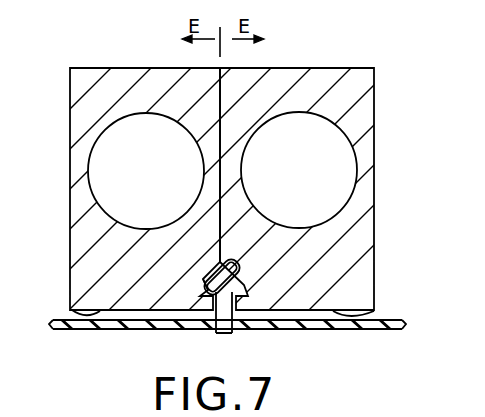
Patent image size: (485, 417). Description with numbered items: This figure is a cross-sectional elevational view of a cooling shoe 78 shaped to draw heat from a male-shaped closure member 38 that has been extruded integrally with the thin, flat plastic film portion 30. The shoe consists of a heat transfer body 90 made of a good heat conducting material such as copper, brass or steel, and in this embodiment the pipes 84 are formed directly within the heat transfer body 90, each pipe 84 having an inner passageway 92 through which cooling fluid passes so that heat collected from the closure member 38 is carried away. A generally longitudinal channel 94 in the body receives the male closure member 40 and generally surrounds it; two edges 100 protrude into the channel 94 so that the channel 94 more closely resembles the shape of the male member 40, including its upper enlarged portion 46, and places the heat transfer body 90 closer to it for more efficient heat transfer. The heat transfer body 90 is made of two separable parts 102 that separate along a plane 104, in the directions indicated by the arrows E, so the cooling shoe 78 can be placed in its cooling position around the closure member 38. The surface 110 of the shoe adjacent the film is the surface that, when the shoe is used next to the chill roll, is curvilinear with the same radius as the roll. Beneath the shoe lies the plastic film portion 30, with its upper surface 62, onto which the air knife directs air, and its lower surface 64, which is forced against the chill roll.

The cooling shoe 78 is at (396, 74).
The heat transfer body 90 is at (112, 78).
The separable parts 102 is at (187, 102).
The pipe 84 is at (98, 136).
The inner passageway 92 is at (153, 176).
The longitudinal channel 94 is at (240, 273).
The male closure member 40 is at (228, 322).
The plane 104 is at (220, 237).
The upper enlarged portion 46 is at (205, 283).
The edges 100 is at (200, 303).
The surface 110 is at (75, 314).
The plastic film portion 30 is at (320, 323).
The upper surface 62 is at (393, 319).
The lower surface 64 is at (376, 329).
The closure member 38 is at (199, 315).